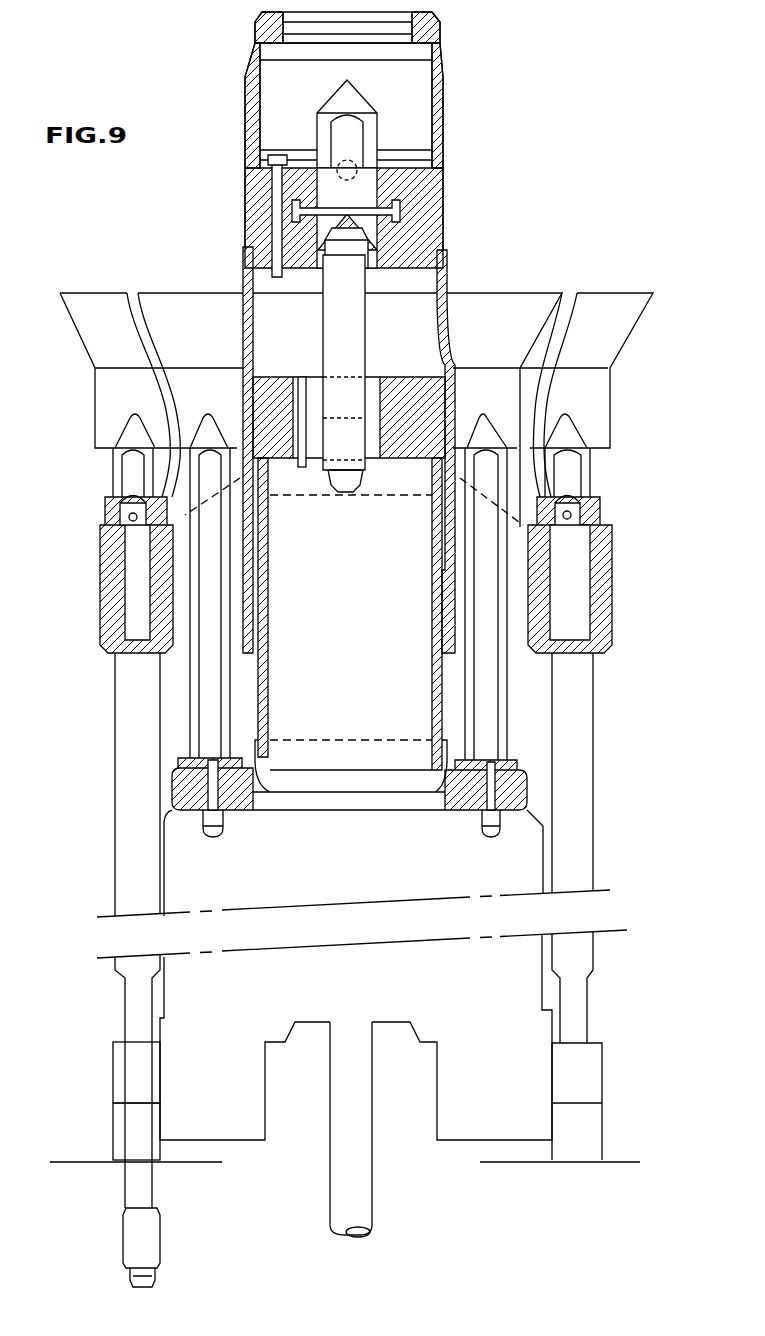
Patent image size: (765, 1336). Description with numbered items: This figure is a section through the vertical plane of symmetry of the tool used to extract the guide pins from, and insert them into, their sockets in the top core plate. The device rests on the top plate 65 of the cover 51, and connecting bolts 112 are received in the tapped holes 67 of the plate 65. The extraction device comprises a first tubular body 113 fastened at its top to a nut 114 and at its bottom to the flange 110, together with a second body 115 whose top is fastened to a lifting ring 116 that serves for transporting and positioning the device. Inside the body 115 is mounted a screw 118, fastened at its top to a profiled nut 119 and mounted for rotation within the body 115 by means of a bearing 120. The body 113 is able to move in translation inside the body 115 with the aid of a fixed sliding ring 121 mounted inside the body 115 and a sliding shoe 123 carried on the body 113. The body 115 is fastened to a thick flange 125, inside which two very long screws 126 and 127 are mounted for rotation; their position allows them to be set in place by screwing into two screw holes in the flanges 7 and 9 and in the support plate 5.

The lifting ring 116 is at (437, 24).
The profiled nut 119 is at (363, 140).
The bearing 120 is at (383, 247).
The screw 118 is at (348, 330).
The sliding shoe 123 is at (448, 402).
The second body 115 is at (455, 400).
The nut 114 is at (391, 478).
The thick flange 125 is at (600, 548).
The fixed sliding ring 121 is at (437, 632).
The first tubular body 113 is at (442, 703).
The connecting bolts 112 is at (487, 731).
The flange 110 is at (518, 790).
The top plate 65 is at (518, 848).
The very long screw 126 is at (568, 872).
The very long screw 127 is at (125, 884).
The tapped holes 67 is at (197, 826).
The cover 51 is at (513, 993).
The flange 9 is at (118, 1078).
The flange 7 is at (118, 1132).
The support plate 5 is at (63, 1182).